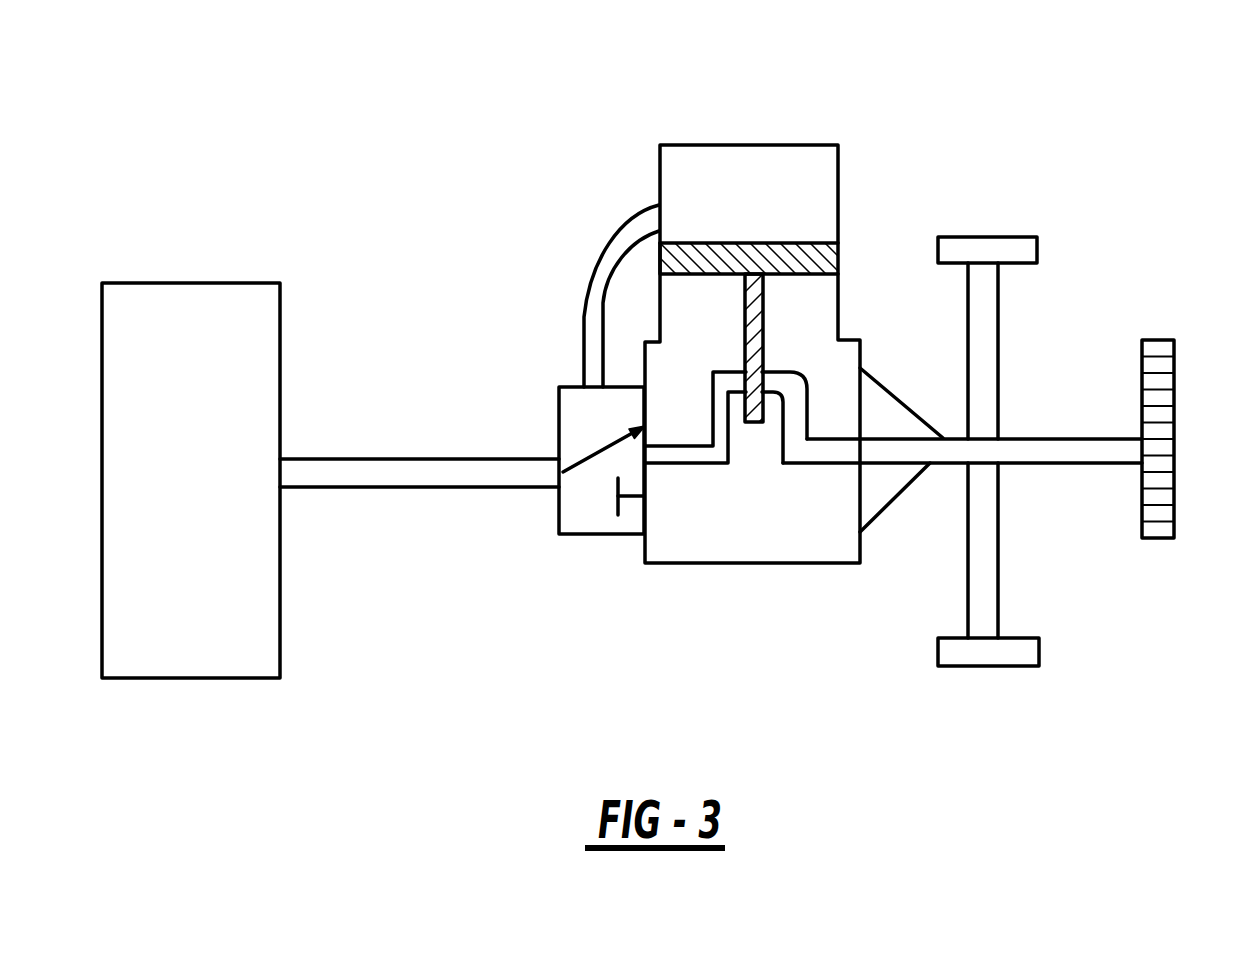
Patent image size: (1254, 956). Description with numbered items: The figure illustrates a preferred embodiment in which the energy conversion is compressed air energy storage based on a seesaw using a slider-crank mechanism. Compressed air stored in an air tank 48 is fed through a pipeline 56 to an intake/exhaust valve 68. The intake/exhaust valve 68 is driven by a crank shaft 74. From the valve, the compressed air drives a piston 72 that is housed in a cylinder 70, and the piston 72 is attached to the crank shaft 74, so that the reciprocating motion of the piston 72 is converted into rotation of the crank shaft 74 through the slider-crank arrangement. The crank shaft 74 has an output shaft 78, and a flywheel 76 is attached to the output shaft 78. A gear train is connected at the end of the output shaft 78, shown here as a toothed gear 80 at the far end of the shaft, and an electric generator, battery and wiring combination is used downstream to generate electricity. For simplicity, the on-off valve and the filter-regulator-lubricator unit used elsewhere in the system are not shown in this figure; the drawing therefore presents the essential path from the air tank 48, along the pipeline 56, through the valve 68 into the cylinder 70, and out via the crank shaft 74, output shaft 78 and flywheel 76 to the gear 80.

The air tank 48 is at (192, 283).
The pipeline 56 is at (478, 487).
The intake/exhaust valve 68 is at (605, 534).
The cylinder 70 is at (838, 196).
The piston 72 is at (724, 243).
The crank shaft 74 is at (820, 465).
The flywheel 76 is at (1037, 250).
The output shaft 78 is at (1058, 463).
The gear 80 is at (1175, 503).